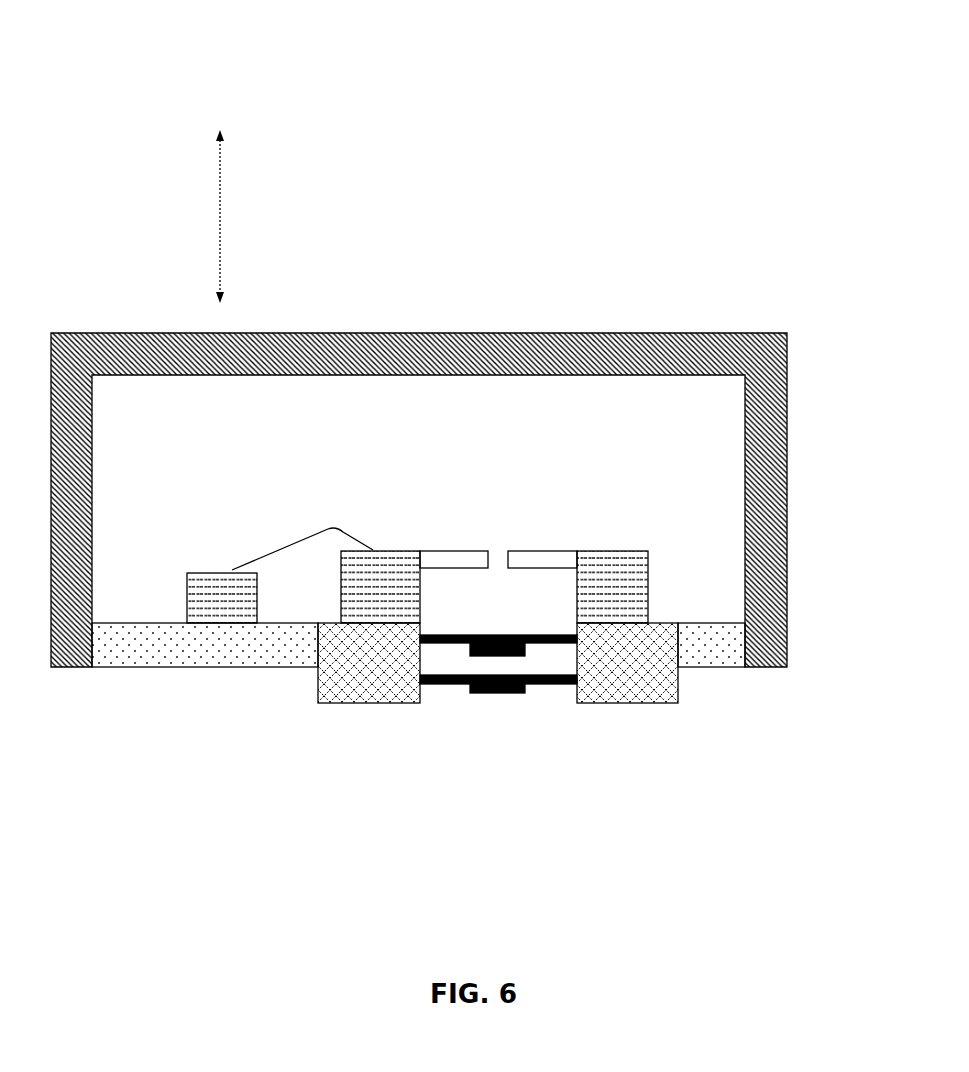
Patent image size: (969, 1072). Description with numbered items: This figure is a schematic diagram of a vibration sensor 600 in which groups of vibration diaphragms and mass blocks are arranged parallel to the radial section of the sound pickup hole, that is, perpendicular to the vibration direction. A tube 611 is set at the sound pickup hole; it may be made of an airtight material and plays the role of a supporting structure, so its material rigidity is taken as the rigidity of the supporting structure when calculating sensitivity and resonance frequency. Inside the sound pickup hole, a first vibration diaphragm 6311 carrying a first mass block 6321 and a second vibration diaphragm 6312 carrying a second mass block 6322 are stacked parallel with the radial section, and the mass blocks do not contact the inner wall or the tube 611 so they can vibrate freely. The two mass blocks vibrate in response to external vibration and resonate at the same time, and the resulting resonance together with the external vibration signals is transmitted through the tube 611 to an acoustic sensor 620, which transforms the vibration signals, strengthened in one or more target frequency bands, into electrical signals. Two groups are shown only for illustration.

The vibration sensor 600 is at (135, 103).
The acoustic sensor 620 is at (640, 325).
The tube 611 is at (316, 697).
The first vibration diaphragm 6311 is at (554, 644).
The first mass block 6321 is at (529, 651).
The second vibration diaphragm 6312 is at (549, 688).
The second mass block 6322 is at (502, 693).